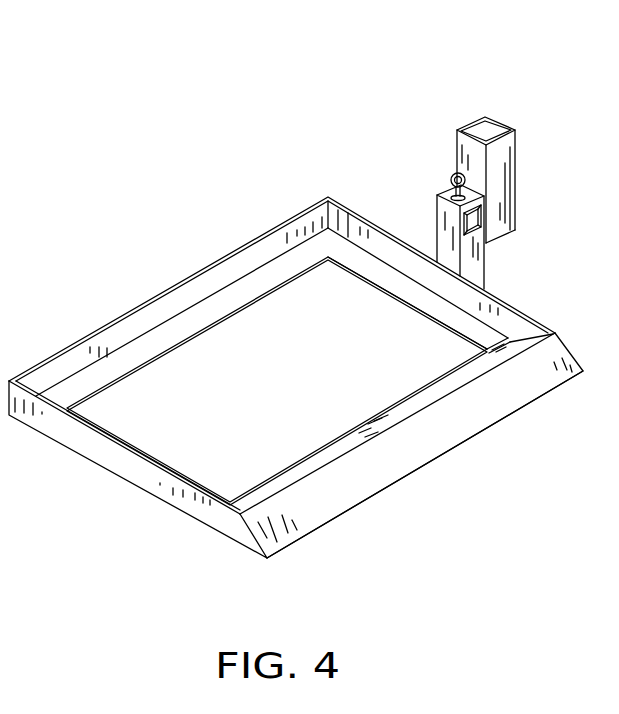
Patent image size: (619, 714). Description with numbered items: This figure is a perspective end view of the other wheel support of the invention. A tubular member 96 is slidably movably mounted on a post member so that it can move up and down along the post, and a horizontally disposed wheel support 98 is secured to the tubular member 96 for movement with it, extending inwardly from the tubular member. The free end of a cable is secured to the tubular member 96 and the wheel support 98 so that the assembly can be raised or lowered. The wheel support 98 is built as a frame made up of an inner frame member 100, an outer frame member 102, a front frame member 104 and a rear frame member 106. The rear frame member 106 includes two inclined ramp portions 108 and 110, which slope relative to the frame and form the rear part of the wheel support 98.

The tubular member 96 is at (512, 162).
The wheel support 98 is at (547, 303).
The inner frame member 100 is at (446, 291).
The outer frame member 102 is at (148, 498).
The front frame member 104 is at (197, 282).
The rear frame member 106 is at (381, 507).
The inclined ramp portion 108 is at (447, 428).
The inclined ramp portion 110 is at (332, 440).